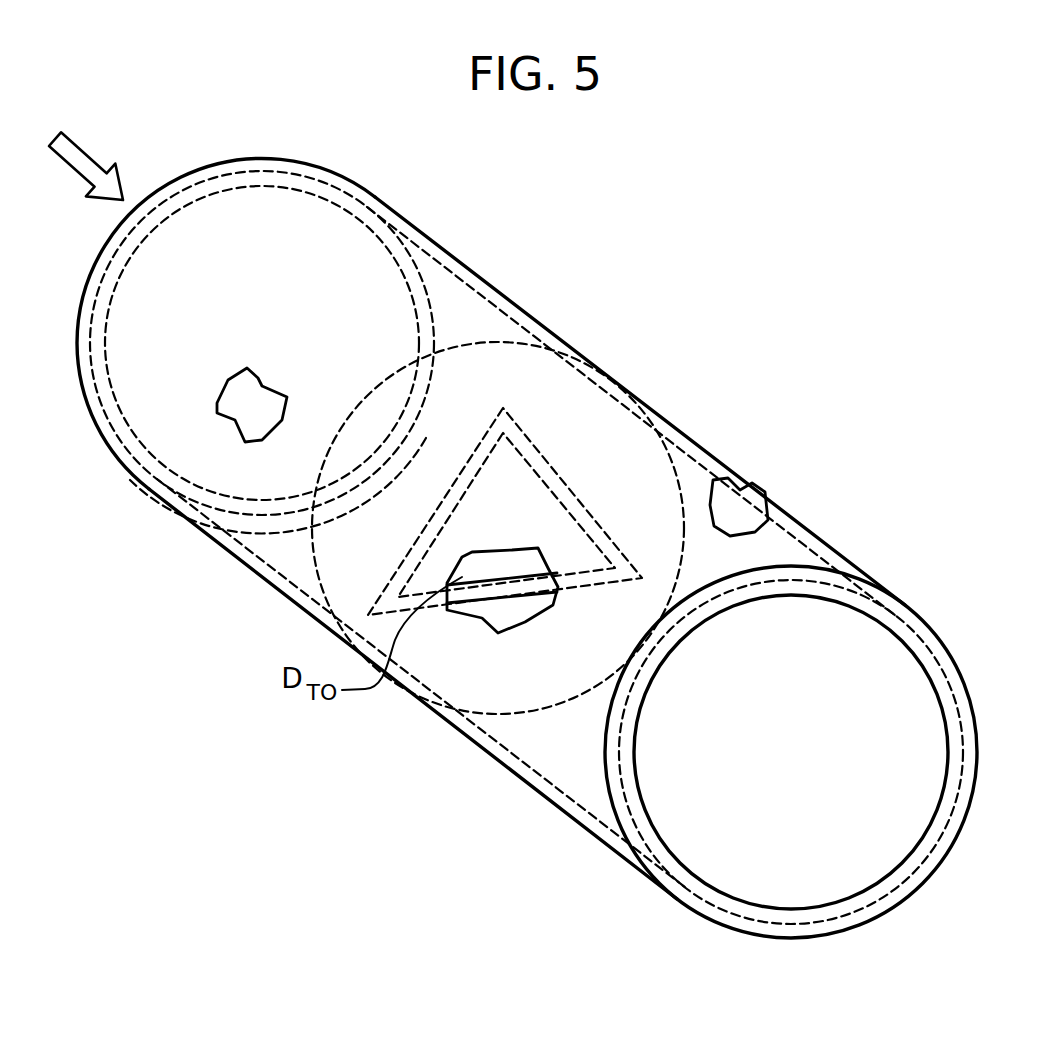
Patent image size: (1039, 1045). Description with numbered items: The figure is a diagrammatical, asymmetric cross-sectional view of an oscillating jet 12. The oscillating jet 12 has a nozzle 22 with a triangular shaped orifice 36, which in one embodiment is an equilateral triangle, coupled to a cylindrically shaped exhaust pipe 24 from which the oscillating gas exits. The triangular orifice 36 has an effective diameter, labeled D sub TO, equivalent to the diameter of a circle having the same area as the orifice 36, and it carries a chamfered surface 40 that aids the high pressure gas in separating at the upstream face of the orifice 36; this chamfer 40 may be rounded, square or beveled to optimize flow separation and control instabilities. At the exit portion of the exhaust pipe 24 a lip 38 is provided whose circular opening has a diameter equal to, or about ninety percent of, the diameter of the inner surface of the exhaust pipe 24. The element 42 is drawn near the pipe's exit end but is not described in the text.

The oscillating jet 12 is at (712, 258).
The nozzle 22 is at (258, 392).
The exhaust pipe 24 is at (738, 508).
The triangular shaped orifice 36 is at (480, 590).
The lip 38 is at (952, 813).
The chamfered surface 40 is at (508, 590).
The inner bore of tube end 42 is at (848, 608).